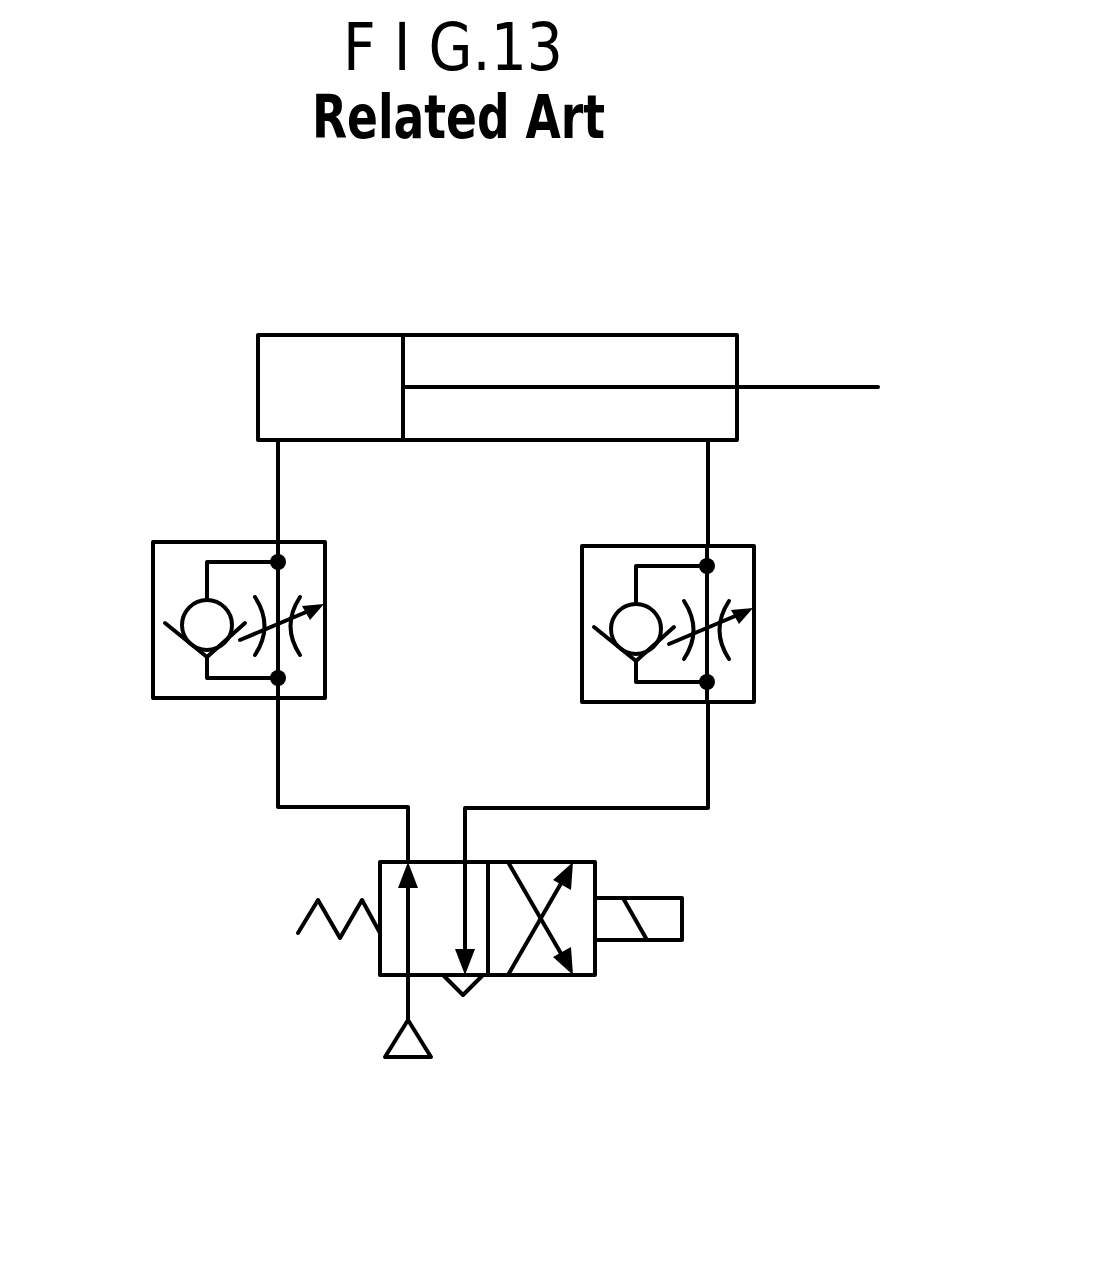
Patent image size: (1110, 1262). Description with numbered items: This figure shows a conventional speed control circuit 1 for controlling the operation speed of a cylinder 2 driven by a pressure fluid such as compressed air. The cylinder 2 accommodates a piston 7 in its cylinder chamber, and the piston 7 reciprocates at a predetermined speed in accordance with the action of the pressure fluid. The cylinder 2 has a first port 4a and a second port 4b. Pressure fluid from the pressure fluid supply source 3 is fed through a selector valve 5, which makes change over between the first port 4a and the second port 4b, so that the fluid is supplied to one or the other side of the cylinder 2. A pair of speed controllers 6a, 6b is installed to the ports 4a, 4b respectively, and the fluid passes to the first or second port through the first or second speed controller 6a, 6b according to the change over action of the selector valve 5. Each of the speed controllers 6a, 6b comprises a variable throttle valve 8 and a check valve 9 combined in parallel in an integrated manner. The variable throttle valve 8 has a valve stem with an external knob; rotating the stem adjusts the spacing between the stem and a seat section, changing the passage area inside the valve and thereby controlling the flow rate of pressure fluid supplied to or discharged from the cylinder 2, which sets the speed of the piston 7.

The speed control circuit 1 is at (757, 188).
The cylinder 2 is at (554, 330).
The piston 7 is at (418, 355).
The first port 4a is at (276, 444).
The second port 4b is at (712, 446).
The first speed controller 6a is at (145, 693).
The second speed controller 6b is at (762, 699).
The variable throttle valve 8 is at (287, 598).
The check valve 9 is at (176, 612).
The selector valve 5 is at (541, 981).
The pressure fluid supply source 3 is at (408, 1058).